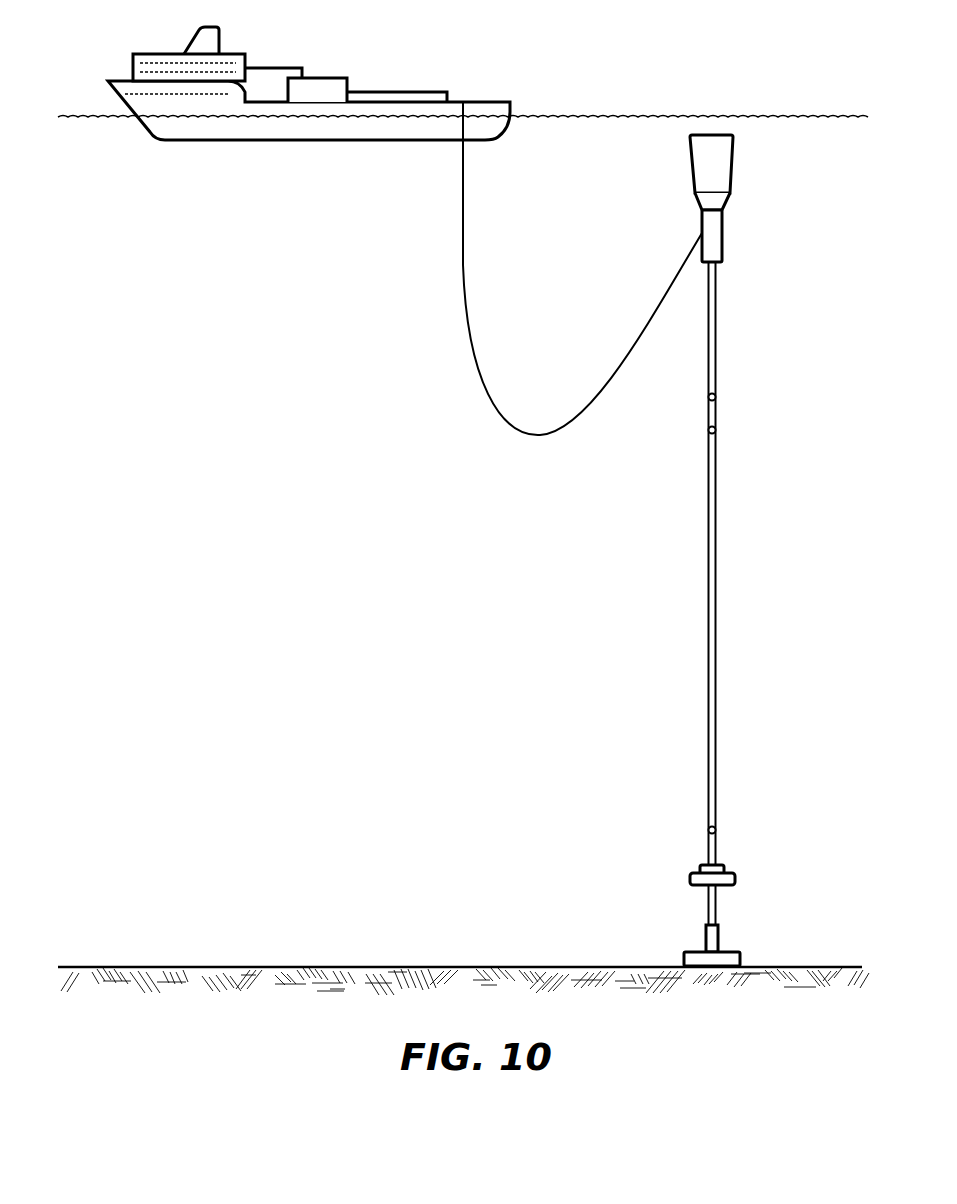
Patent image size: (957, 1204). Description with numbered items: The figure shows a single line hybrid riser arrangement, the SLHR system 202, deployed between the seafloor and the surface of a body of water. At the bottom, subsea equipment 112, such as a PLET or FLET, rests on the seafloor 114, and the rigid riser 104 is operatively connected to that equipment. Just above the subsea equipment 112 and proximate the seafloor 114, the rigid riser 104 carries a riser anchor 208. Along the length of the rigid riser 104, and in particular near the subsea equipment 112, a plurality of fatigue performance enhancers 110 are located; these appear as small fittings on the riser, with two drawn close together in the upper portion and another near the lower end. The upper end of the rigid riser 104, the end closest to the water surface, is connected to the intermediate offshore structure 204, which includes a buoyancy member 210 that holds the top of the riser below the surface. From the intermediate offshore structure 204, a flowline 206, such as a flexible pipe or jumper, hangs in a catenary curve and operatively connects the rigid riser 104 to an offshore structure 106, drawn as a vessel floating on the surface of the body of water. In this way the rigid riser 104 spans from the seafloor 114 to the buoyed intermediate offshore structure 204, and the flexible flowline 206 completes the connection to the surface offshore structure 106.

The offshore structure 106 is at (138, 33).
The flowline 206 is at (493, 404).
The buoyancy member 210 is at (735, 152).
The intermediate offshore structure 204 is at (752, 203).
The SLHR system 202 is at (752, 343).
The rigid riser 104 is at (708, 625).
The fatigue performance enhancers 110 is at (716, 397).
The riser anchor 208 is at (720, 935).
The subsea equipment 112 is at (697, 950).
The seafloor 114 is at (242, 966).